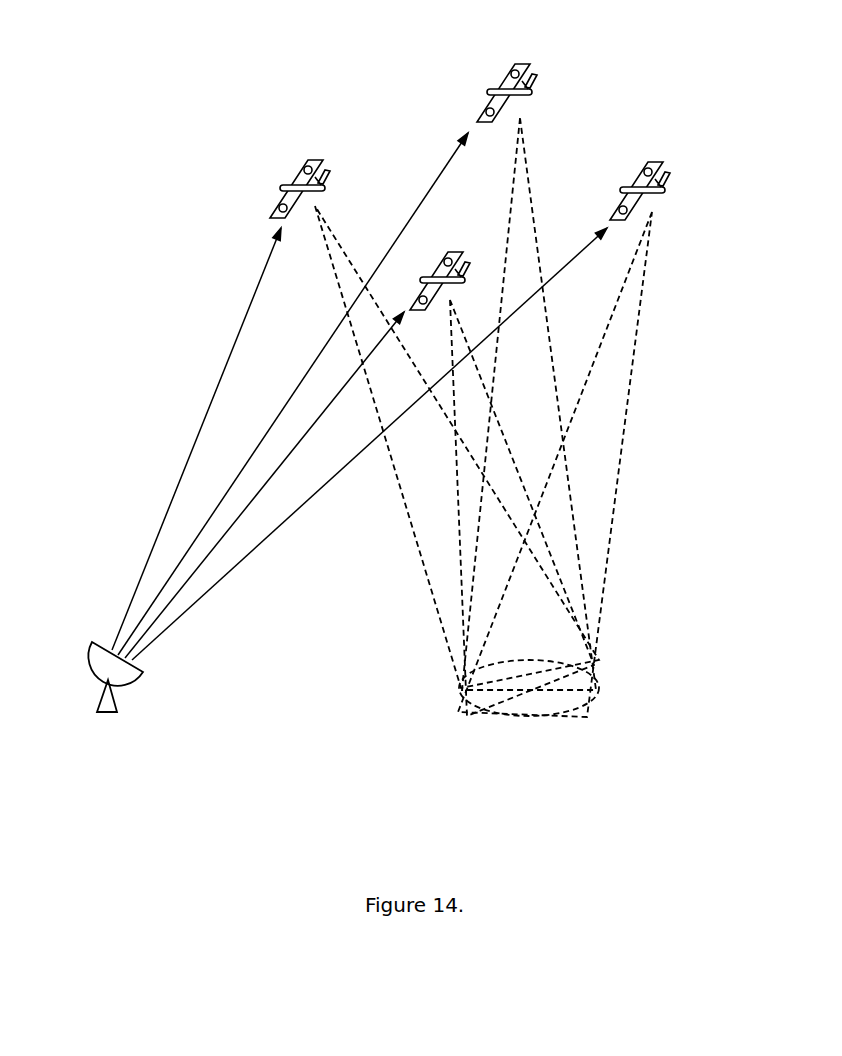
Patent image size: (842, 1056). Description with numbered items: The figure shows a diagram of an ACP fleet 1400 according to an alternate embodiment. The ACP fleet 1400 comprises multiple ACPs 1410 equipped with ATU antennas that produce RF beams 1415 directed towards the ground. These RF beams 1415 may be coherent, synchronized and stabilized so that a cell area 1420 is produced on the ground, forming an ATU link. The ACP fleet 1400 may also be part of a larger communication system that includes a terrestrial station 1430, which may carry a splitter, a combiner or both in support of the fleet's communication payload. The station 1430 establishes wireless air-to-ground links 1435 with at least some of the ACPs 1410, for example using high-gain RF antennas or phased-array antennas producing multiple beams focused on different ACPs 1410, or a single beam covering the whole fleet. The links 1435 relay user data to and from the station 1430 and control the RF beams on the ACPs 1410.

The ACP fleet 1400 is at (408, 421).
The ACP 1410 is at (666, 160).
The RF beams 1415 is at (567, 487).
The cell area 1420 is at (529, 674).
The terrestrial station 1430 is at (96, 663).
The air-to-ground (ATG) links 1435 is at (190, 460).